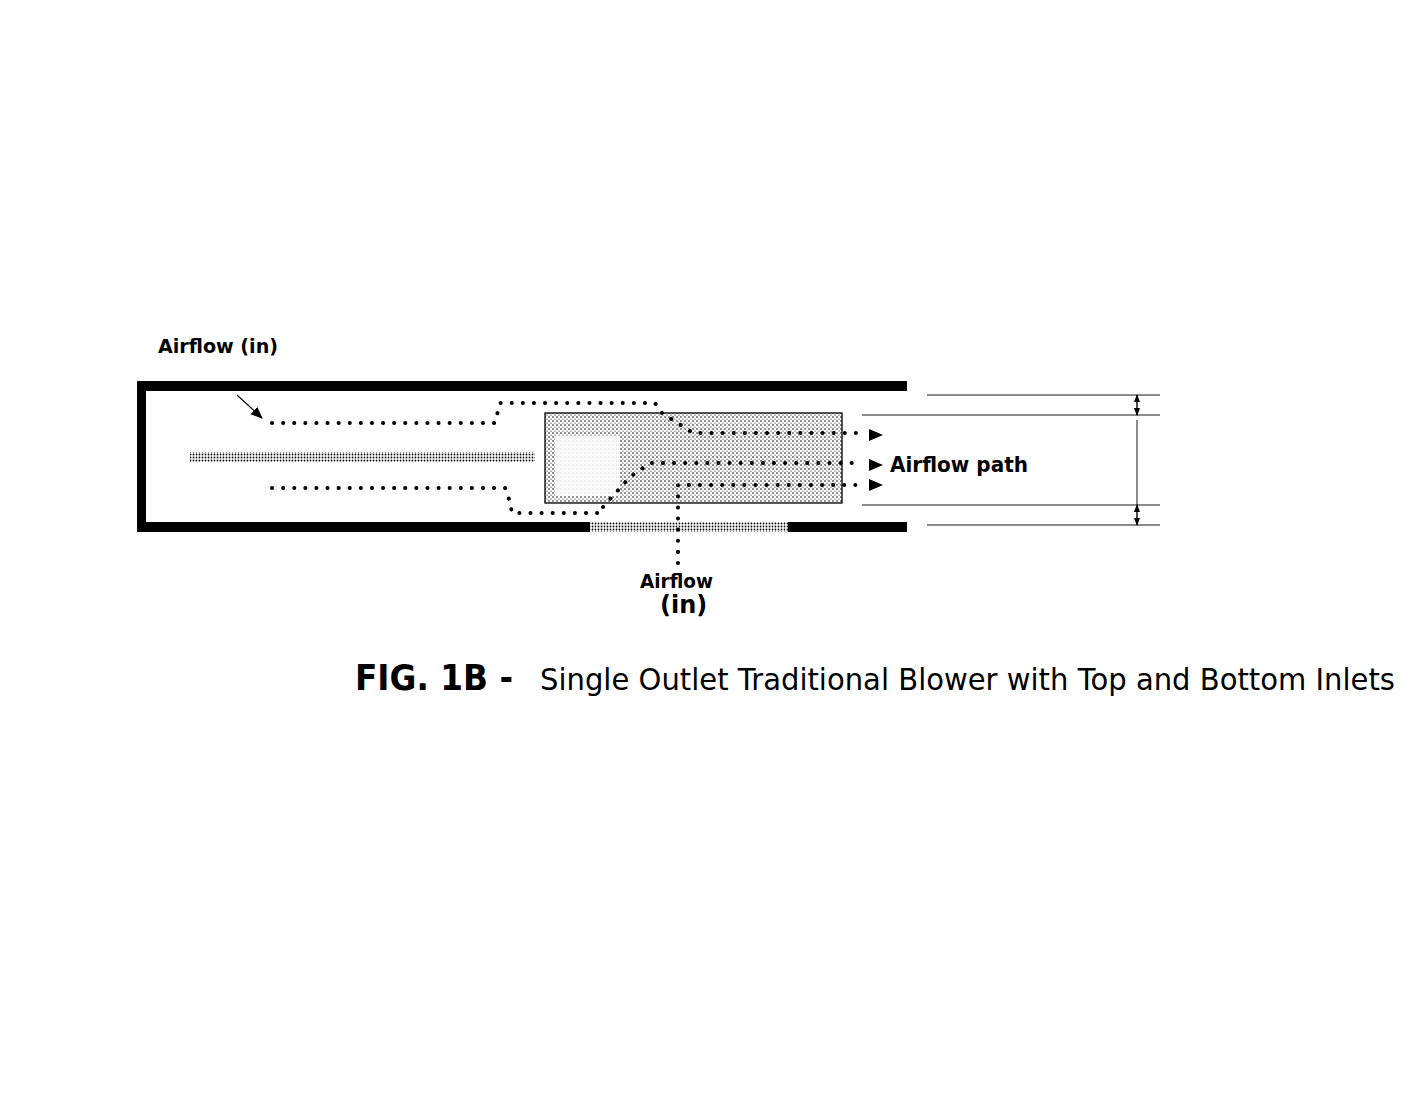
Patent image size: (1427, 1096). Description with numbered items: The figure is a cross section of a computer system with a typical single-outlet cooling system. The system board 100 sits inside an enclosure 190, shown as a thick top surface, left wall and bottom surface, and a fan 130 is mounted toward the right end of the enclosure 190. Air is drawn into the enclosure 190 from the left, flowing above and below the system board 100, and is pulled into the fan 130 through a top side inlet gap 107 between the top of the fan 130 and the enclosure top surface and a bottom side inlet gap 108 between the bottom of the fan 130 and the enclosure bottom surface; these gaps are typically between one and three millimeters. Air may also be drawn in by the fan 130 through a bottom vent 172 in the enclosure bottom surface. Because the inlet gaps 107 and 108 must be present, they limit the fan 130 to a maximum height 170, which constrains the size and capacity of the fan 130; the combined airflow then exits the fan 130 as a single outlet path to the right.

The enclosure 190 is at (122, 399).
The system board 100 is at (236, 475).
The fan 130 is at (693, 458).
The bottom vent 172 is at (765, 565).
The top side inlet gap 107 is at (1263, 403).
The maximum height 170 is at (1260, 462).
The bottom side inlet gap 108 is at (1280, 516).